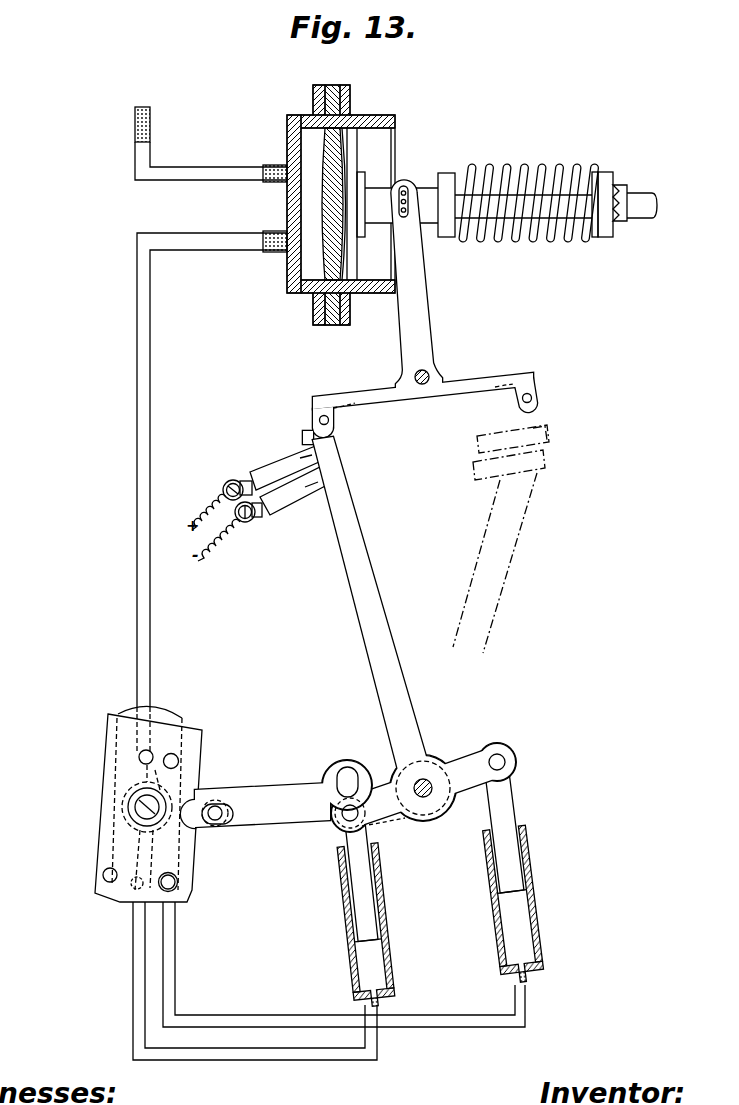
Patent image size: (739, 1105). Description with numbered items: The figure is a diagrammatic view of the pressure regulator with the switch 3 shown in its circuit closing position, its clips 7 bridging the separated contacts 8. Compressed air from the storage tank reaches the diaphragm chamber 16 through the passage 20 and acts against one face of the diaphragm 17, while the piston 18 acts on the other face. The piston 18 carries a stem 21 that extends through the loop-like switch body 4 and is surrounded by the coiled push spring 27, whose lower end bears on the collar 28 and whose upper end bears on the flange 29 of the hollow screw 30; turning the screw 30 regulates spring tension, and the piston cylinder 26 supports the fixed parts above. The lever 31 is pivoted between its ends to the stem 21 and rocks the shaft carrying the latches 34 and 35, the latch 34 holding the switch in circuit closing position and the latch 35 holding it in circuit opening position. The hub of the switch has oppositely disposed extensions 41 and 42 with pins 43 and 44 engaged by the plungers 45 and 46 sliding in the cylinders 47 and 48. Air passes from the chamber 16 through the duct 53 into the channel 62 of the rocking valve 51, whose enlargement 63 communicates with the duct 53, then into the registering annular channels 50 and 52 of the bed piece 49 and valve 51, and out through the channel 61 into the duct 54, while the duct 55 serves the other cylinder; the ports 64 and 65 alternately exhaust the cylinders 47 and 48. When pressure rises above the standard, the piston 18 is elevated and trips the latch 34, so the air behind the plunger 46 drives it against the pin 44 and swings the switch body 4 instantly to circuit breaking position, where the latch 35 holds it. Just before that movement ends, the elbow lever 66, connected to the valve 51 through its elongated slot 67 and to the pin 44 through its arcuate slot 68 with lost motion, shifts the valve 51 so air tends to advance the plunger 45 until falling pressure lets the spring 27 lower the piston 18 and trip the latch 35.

The electric switch 3 is at (421, 539).
The switch body 4 is at (415, 737).
The clips 7 is at (273, 468).
The contacts 8 is at (235, 480).
The diaphragm chamber 16 is at (348, 204).
The diaphragm 17 is at (325, 205).
The piston 18 is at (350, 148).
The passage 20 is at (150, 122).
The stem 21 is at (505, 205).
The piston cylinder 26 is at (370, 270).
The coiled push spring 27 is at (567, 240).
The collar 28 is at (447, 236).
The flange 29 is at (605, 237).
The screw 30 is at (620, 192).
The lever 31 is at (425, 296).
The latch 34 is at (322, 435).
The latch 35 is at (540, 405).
The extension 41 is at (502, 750).
The extension 42 is at (385, 822).
The pin 43 is at (505, 762).
The pin 44 is at (348, 815).
The plunger 45 is at (538, 819).
The plunger 46 is at (393, 922).
The cylinder 47 is at (542, 901).
The cylinder 48 is at (399, 895).
The bed piece 49 is at (110, 730).
The annular channel 50 is at (125, 805).
The rocking valve 51 is at (197, 740).
The annular channel 52 is at (132, 812).
The duct 53 is at (290, 245).
The duct 54 is at (430, 1017).
The duct 55 is at (265, 1062).
The channel 61 is at (150, 872).
The channel 62 is at (145, 772).
The enlargement 63 is at (172, 755).
The port 64 is at (172, 884).
The port 65 is at (108, 882).
The elbow lever 66 is at (262, 805).
The elongated slot 67 is at (217, 815).
The arcuate slot 68 is at (348, 783).